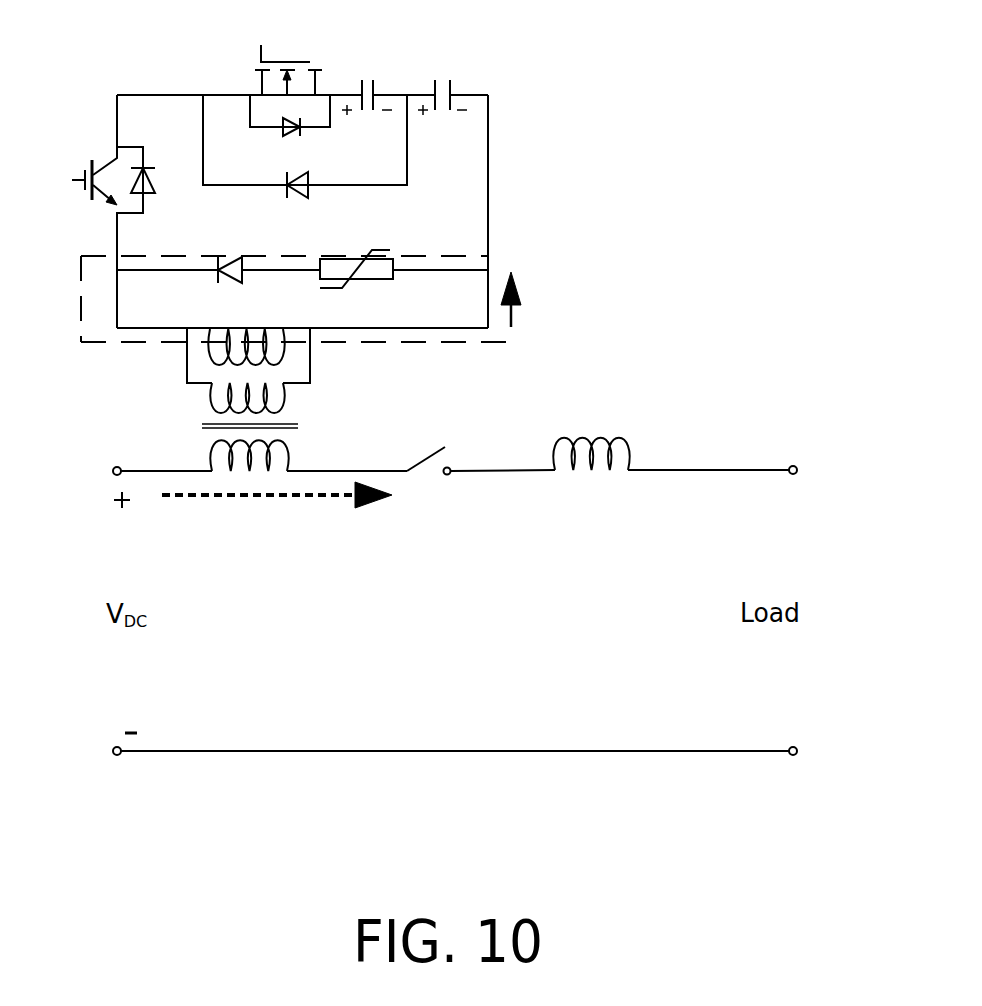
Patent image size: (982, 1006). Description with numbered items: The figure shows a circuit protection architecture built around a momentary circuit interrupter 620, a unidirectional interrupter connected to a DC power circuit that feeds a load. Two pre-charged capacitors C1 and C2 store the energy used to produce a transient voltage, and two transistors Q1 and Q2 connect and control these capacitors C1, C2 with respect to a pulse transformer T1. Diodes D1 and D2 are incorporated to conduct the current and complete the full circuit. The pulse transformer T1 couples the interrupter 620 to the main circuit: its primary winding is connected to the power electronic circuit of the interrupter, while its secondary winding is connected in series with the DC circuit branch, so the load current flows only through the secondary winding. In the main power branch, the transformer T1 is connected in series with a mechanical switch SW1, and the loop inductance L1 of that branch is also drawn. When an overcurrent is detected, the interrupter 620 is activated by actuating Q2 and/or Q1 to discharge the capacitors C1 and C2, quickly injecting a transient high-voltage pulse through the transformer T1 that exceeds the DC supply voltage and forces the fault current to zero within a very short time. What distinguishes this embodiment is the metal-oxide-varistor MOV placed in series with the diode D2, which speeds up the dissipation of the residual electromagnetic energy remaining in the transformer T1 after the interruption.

The momentary circuit interrupter 620 is at (580, 156).
The transistor Q1 is at (298, 106).
The transistor Q2 is at (116, 211).
The diode D1 is at (305, 162).
The diode D2 is at (302, 286).
The capacitor C1 is at (373, 92).
The capacitor C2 is at (448, 92).
The metal-oxide-varistor MOV is at (374, 280).
The pulse transformer T1 is at (261, 399).
The mechanical switch SW1 is at (441, 448).
The loop inductance L1 is at (591, 440).